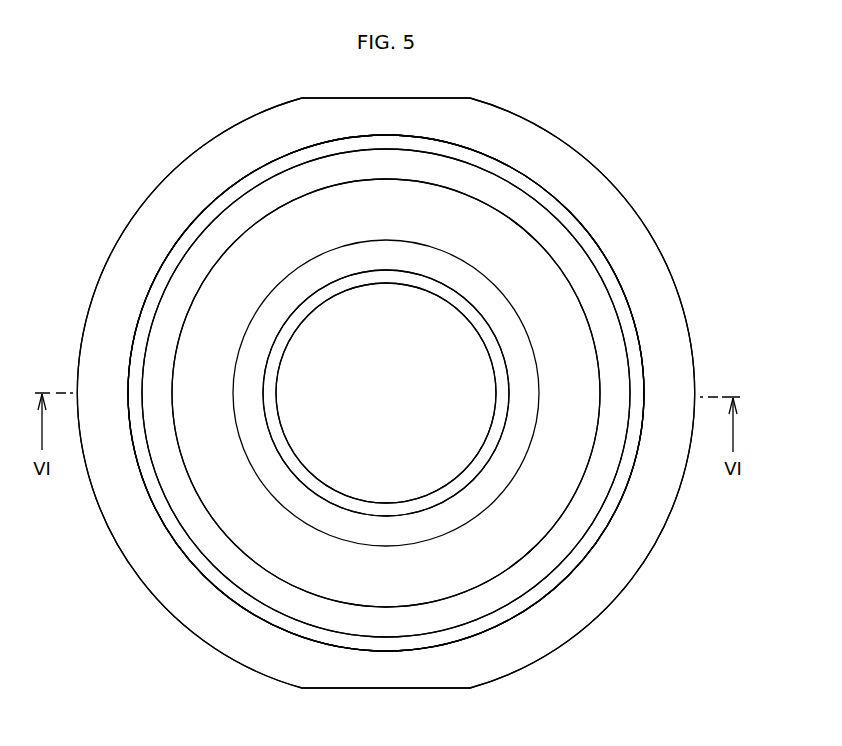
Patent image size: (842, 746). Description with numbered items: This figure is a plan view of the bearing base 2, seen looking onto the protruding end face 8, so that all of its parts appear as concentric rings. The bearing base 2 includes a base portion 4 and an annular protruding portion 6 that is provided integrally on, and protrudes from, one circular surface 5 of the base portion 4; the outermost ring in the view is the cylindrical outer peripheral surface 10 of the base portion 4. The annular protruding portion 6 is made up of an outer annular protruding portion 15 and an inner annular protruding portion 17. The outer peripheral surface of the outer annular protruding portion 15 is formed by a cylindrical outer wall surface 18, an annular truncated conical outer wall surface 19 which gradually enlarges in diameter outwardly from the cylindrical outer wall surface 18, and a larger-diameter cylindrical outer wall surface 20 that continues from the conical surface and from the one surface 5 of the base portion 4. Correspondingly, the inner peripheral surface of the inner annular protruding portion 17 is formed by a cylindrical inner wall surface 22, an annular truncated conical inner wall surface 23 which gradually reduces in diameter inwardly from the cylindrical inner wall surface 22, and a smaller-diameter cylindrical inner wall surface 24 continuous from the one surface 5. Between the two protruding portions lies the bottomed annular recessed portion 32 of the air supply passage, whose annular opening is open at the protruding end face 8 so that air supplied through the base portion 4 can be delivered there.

The bearing base 2 is at (632, 190).
The base portion 4 is at (163, 205).
The one circular surface 5 is at (605, 570).
The annular protruding portion 6 is at (187, 558).
The protruding end face 8 is at (527, 217).
The cylindrical outer peripheral surface 10 is at (110, 255).
The outer annular protruding portion 15 is at (387, 626).
The inner annular protruding portion 17 is at (520, 417).
The cylindrical outer wall surface 18 is at (338, 634).
The annular truncated conical outer wall surface 19 is at (618, 295).
The cylindrical outer wall surface 20 is at (240, 180).
The cylindrical inner wall surface 22 is at (422, 508).
The annular truncated conical inner wall surface 23 is at (418, 280).
The cylindrical inner wall surface 24 is at (297, 453).
The bottomed annular recessed portion 32 is at (440, 580).